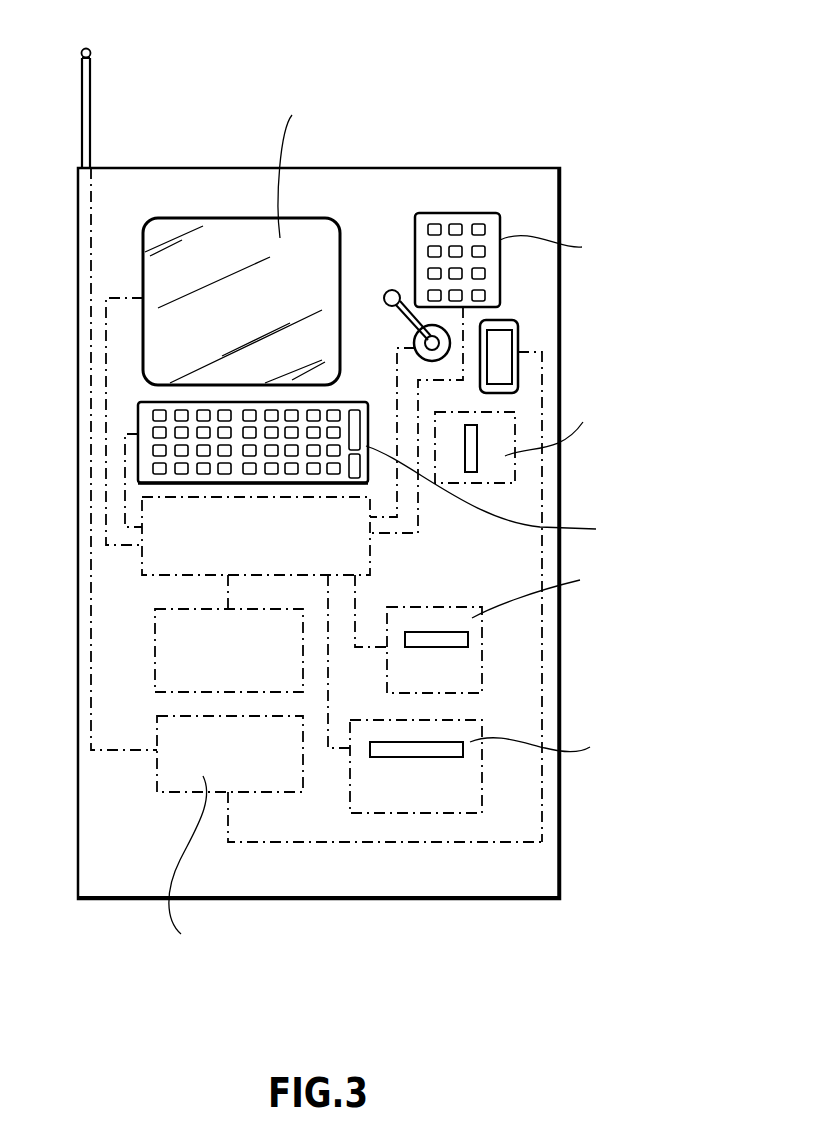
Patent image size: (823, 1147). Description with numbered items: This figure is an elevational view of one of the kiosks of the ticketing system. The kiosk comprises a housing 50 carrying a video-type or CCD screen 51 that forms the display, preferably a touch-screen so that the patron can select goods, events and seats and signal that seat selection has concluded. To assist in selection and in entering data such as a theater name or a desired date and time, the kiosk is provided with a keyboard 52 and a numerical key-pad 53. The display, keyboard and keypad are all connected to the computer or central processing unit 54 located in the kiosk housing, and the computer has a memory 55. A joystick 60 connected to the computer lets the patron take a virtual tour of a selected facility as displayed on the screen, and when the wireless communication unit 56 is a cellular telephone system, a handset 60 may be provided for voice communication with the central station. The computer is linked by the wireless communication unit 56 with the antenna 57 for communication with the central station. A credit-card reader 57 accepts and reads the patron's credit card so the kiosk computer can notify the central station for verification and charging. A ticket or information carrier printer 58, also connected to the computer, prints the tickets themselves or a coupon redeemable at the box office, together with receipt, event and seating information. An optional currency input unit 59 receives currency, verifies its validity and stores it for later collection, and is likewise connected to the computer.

The housing 50 is at (560, 170).
The screen 51 is at (160, 237).
The keyboard 52 is at (345, 408).
The numerical key-pad 53 is at (481, 216).
The central processing unit 54 is at (370, 570).
The memory 55 is at (158, 632).
The wireless communication unit 56 is at (165, 770).
The antenna / credit-card reader 57 is at (82, 53).
The ticket or information carrier printer 58 is at (470, 676).
The currency input unit 59 is at (462, 803).
The joystick / handset 60 is at (391, 290).